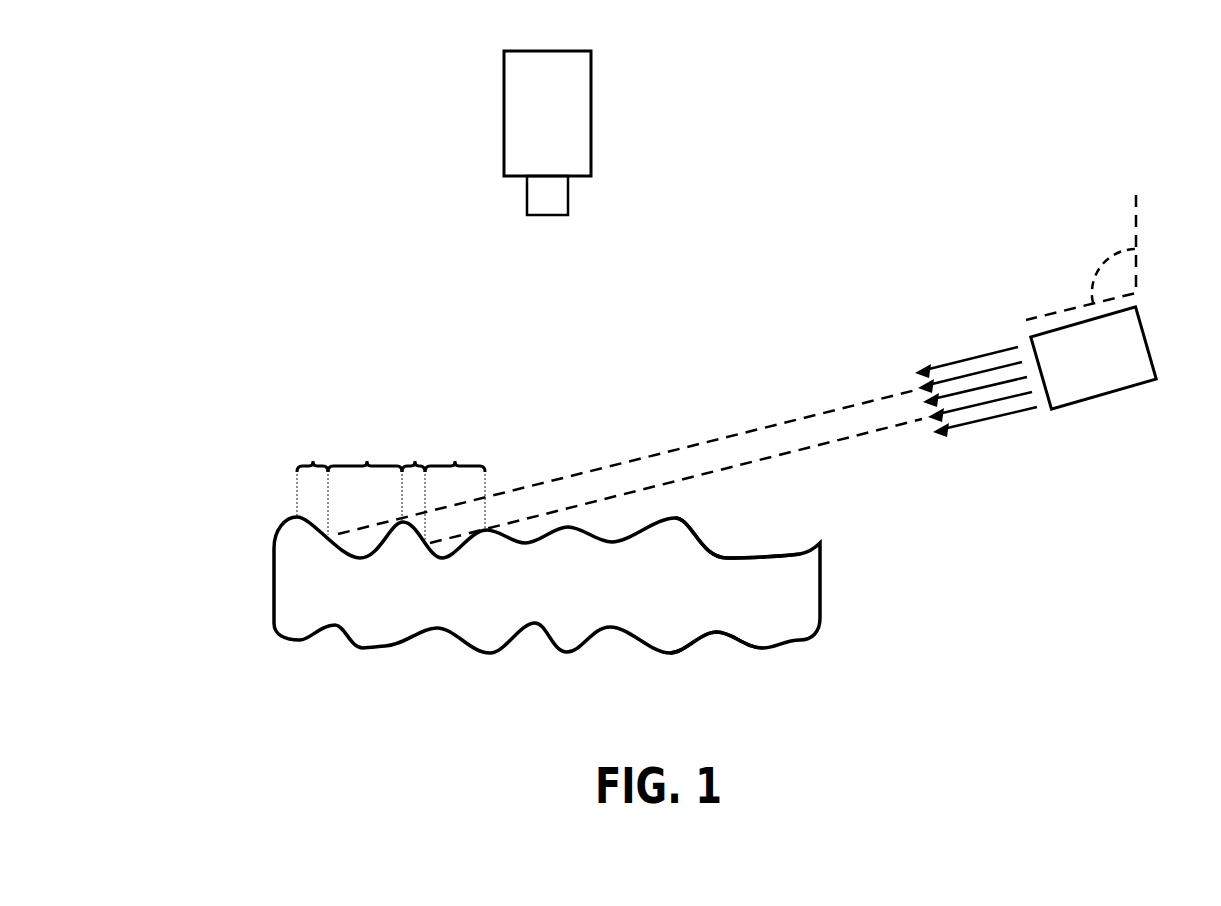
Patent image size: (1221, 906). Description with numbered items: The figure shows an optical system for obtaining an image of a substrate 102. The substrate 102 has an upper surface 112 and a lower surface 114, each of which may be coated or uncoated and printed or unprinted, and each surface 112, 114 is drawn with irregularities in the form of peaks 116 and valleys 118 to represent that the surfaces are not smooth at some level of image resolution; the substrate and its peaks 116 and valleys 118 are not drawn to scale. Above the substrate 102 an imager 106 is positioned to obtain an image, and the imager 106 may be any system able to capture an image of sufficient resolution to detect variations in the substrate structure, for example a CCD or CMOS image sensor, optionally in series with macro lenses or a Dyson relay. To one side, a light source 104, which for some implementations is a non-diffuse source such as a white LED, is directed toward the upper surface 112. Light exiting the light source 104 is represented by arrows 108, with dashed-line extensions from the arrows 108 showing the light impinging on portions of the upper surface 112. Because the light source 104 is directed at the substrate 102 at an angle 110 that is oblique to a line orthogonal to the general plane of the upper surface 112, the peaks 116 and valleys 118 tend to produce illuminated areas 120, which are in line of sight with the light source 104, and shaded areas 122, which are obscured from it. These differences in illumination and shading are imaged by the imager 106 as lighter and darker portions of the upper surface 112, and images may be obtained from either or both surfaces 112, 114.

The substrate 102 is at (272, 580).
The light source 104 is at (1110, 397).
The imager 106 is at (592, 112).
The arrows 108 is at (930, 343).
The angle 110 is at (1108, 260).
The upper surface 112 is at (712, 527).
The lower surface 114 is at (732, 672).
The peaks 116 is at (677, 520).
The valleys 118 is at (523, 543).
The illuminated areas 120 is at (313, 462).
The shaded areas 122 is at (367, 462).